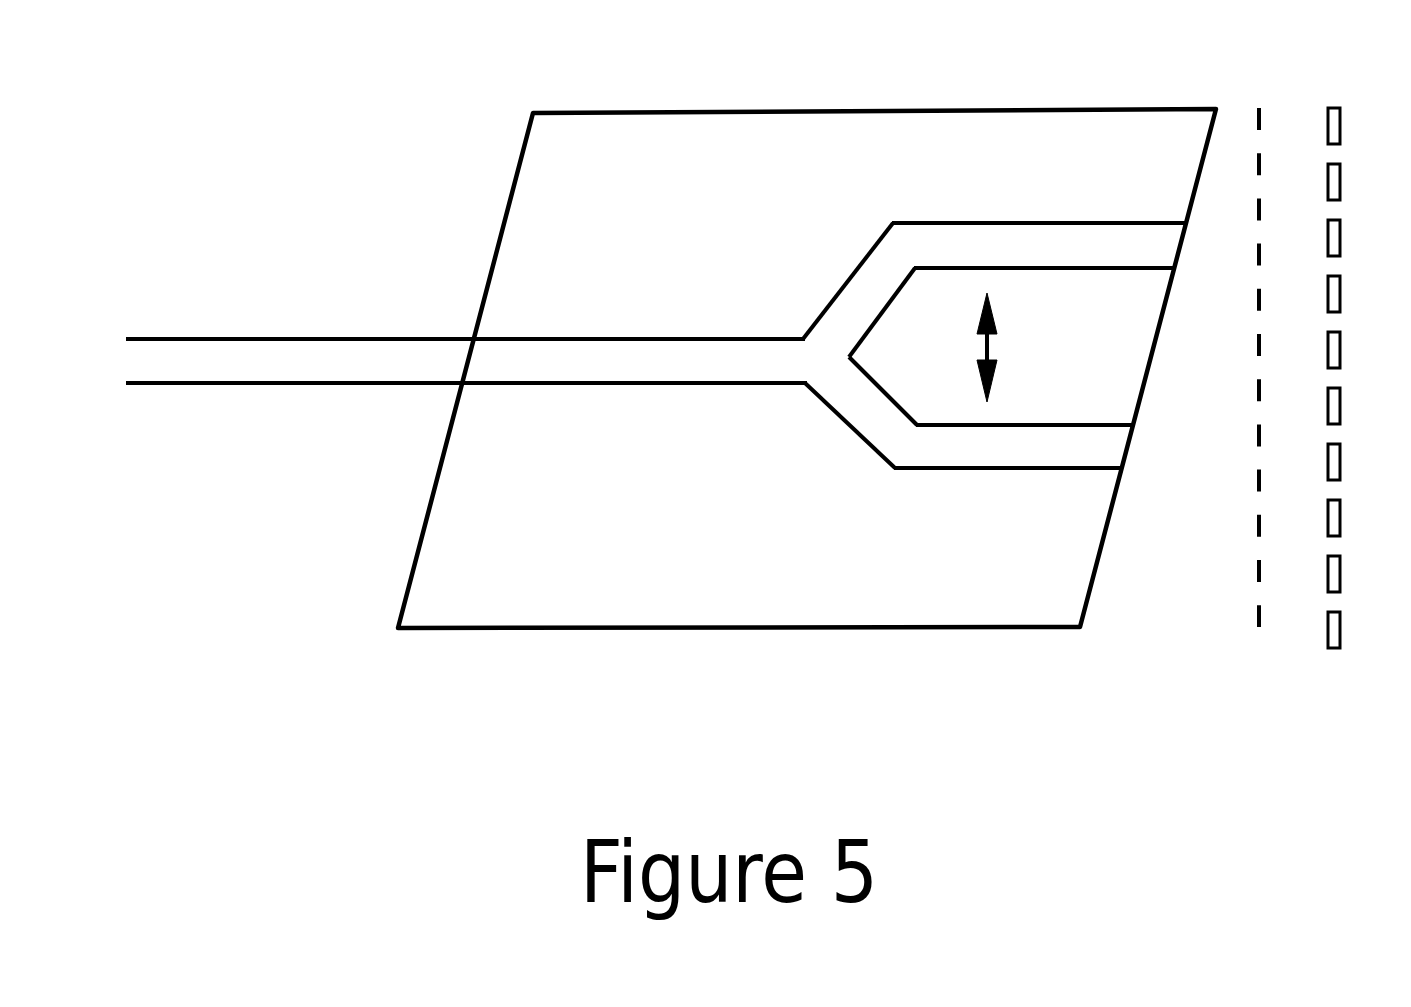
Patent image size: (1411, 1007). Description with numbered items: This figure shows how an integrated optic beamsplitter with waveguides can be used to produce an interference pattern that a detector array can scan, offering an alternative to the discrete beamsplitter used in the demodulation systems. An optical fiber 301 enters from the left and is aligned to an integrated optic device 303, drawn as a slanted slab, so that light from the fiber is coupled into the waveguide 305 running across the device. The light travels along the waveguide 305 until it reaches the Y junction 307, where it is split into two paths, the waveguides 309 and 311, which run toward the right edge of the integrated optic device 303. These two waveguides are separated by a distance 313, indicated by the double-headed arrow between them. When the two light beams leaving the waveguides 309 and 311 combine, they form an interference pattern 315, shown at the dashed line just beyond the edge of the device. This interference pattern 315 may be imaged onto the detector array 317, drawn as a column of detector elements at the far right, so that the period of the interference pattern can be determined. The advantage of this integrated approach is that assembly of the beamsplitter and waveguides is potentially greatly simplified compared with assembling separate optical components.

The optical fiber 301 is at (466, 314).
The integrated optic device 303 is at (807, 335).
The waveguide 305 is at (747, 290).
The Y junction 307 is at (838, 421).
The waveguide 309 is at (1039, 210).
The waveguide 311 is at (1013, 489).
The distance 313 is at (1047, 347).
The interference pattern 315 is at (1258, 419).
The detector array 317 is at (1350, 342).